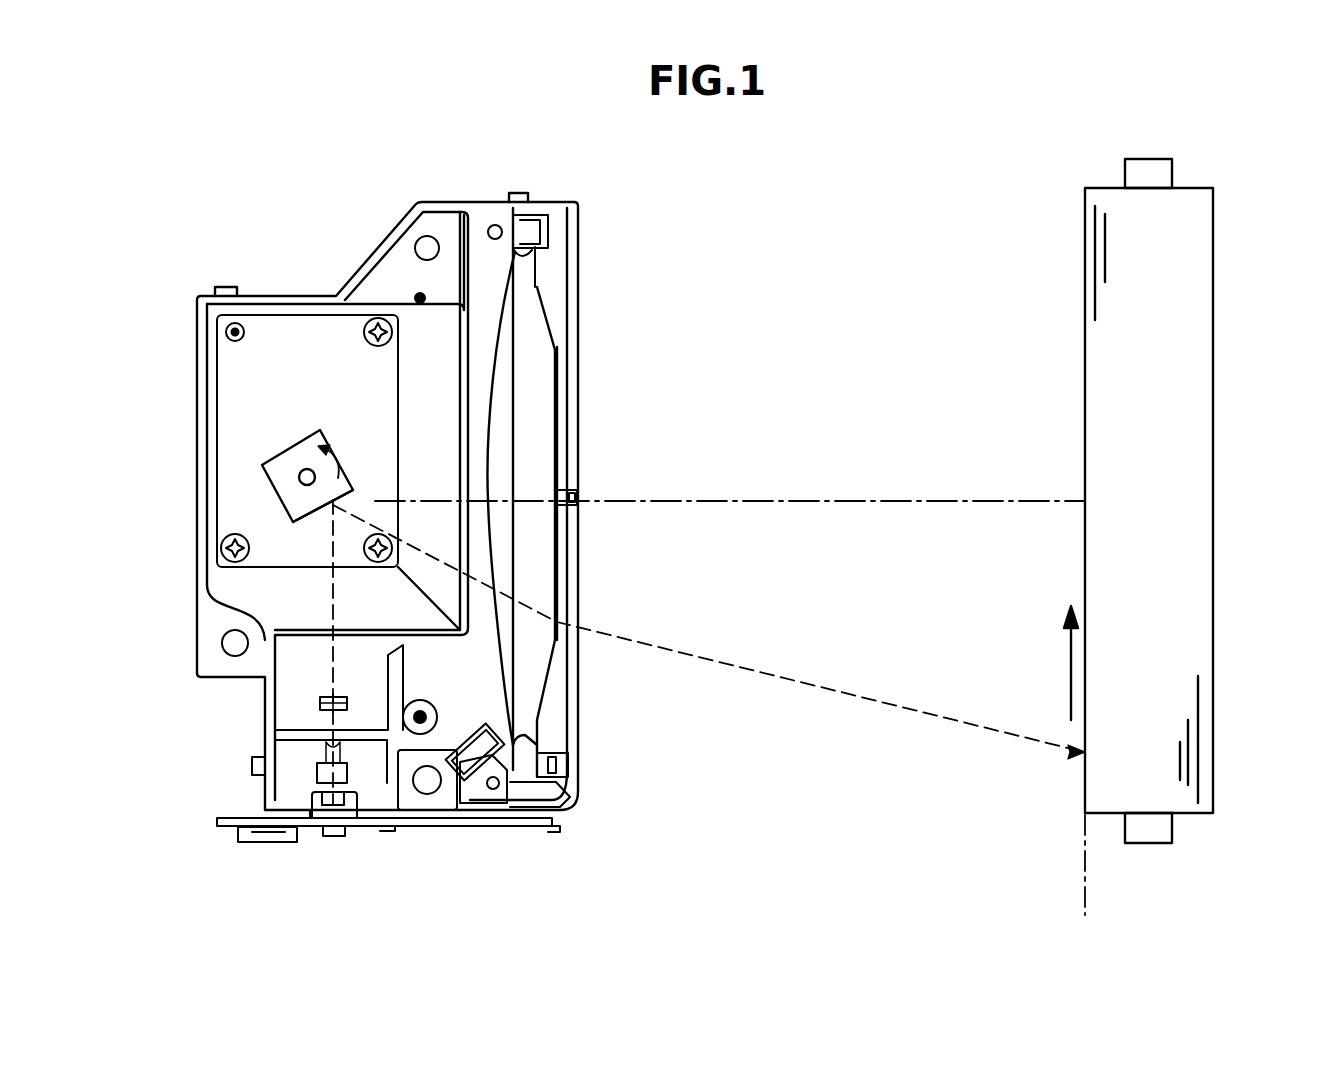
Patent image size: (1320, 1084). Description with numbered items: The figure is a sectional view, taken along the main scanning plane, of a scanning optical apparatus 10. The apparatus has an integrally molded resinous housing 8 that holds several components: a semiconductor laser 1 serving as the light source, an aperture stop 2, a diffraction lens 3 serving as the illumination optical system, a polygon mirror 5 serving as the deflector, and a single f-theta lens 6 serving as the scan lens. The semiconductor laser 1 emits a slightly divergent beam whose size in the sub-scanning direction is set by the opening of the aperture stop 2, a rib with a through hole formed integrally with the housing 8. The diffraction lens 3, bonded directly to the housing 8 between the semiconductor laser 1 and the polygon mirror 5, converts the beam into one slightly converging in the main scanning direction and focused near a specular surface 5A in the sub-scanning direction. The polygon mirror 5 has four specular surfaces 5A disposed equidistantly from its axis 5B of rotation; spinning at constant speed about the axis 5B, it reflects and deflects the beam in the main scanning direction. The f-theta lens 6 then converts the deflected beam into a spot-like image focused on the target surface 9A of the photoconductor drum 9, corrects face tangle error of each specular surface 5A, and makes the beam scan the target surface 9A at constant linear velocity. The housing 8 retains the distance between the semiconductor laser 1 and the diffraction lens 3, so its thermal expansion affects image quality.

The semiconductor laser 1 is at (350, 818).
The aperture stop 2 is at (330, 746).
The diffraction lens 3 is at (320, 704).
The polygon mirror 5 is at (295, 452).
The specular surface 5A is at (306, 532).
The axis of rotation 5B is at (300, 480).
The f-theta lens 6 is at (538, 397).
The housing 8 is at (198, 318).
The photoconductor drum 9 is at (1203, 366).
The target surface 9A is at (1085, 876).
The scanning optical apparatus 10 is at (557, 167).